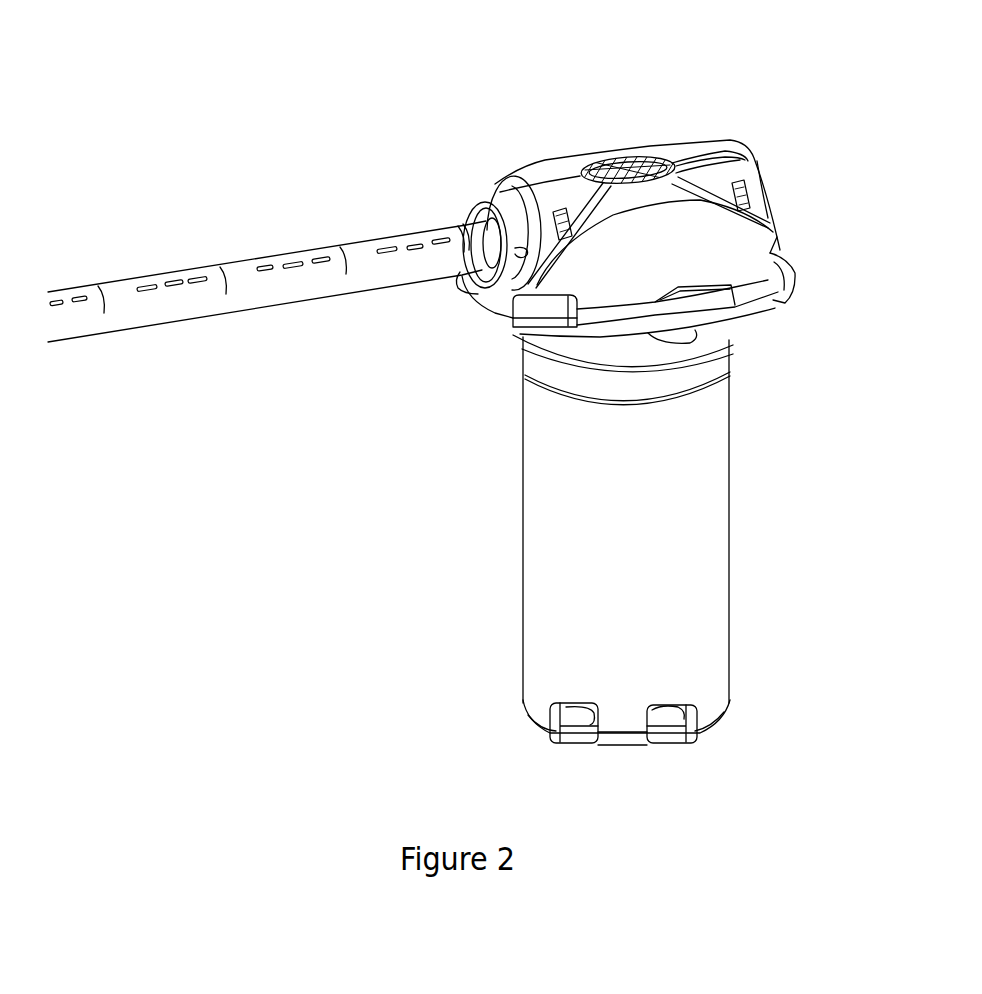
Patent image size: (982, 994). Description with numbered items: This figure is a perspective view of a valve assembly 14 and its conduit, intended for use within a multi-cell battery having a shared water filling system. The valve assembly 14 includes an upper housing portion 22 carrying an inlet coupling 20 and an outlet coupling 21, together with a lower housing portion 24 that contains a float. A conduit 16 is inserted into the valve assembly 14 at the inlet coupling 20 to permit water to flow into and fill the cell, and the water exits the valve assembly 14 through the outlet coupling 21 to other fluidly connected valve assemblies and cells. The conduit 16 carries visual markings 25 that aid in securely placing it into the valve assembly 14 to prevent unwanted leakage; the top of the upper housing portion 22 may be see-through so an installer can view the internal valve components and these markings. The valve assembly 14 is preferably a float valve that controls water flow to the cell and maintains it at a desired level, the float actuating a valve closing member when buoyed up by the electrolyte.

The valve assembly 14 is at (877, 99).
The conduit 16 is at (373, 273).
The inlet coupling 20 is at (436, 195).
The outlet coupling 21 is at (781, 200).
The upper housing portion 22 is at (560, 178).
The lower housing portion 24 is at (645, 537).
The visual markings 25 is at (167, 288).